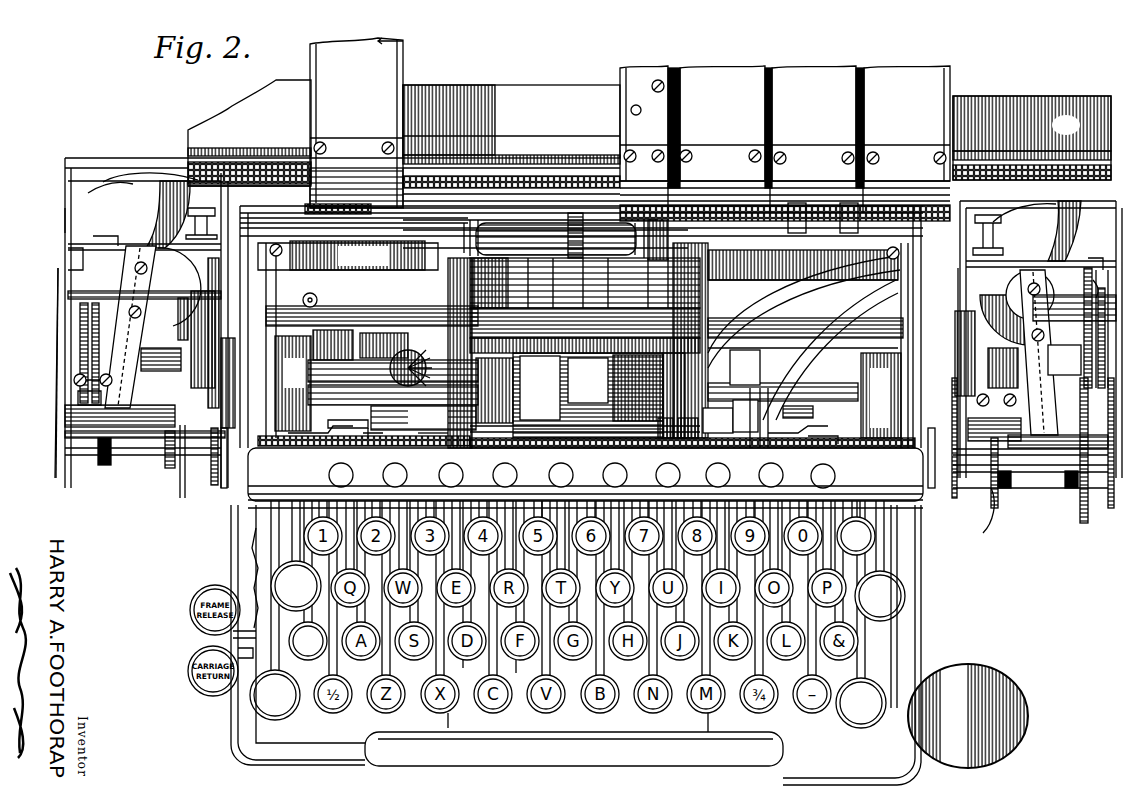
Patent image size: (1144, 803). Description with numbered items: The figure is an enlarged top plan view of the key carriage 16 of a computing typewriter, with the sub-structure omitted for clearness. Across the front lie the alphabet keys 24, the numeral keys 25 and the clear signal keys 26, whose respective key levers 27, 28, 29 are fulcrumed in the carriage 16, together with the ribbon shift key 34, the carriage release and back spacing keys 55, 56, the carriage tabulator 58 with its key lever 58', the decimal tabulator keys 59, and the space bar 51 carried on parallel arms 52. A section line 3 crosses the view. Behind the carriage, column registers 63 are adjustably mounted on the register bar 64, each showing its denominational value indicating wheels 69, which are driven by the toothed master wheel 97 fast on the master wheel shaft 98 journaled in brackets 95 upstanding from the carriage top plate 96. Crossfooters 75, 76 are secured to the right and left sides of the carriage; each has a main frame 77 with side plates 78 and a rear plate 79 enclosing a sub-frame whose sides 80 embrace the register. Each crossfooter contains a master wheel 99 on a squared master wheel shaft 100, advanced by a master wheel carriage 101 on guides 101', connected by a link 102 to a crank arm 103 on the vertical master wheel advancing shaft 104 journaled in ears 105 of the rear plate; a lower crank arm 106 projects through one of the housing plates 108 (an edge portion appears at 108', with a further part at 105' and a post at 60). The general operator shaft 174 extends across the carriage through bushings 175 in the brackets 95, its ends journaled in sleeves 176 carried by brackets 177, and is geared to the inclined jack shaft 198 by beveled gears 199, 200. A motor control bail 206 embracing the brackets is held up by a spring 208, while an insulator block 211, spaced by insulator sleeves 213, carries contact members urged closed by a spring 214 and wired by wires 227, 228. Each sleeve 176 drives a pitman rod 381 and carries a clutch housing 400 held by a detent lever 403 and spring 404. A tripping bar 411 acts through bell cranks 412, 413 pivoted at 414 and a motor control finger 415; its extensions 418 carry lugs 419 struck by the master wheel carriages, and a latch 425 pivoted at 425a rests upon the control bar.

The section line 3 is at (387, 404).
The carriage 16 is at (915, 560).
The alphabet keys 24 is at (526, 650).
The value or numeral keys 25 is at (400, 505).
The clear signal keys 26 is at (844, 547).
The key lever 27 is at (460, 650).
The key lever 28 is at (490, 505).
The key lever 29 is at (305, 592).
The ribbon shift key 34 is at (244, 692).
The space bar 51 is at (574, 749).
The parallel arms 52 is at (466, 710).
The carriage release key 55 is at (898, 590).
The back spacing key 56 is at (845, 712).
The carriage tabulator 58 is at (968, 706).
The key lever 58' is at (926, 606).
The decimal tabulator keys 59 is at (322, 465).
The post 60 is at (93, 458).
The column registers 63 is at (630, 129).
The register bar 64 is at (214, 135).
The denominational value indicating wheels 69 is at (332, 192).
The crossfooter 75 is at (1064, 360).
The crossfooter 76 is at (66, 373).
The crossfooter main frame 77 is at (52, 213).
The side plates 78 is at (50, 456).
The rear plate 79 is at (92, 230).
The sides of sub-frame 80 is at (170, 478).
The brackets 95 is at (472, 222).
The carriage top plate 96 is at (798, 205).
The master wheel 97 is at (560, 170).
The master wheel shaft 98 is at (445, 222).
The master wheel 99 is at (115, 322).
The master wheel shaft 100 is at (70, 332).
The master wheel carriage 101 is at (578, 398).
The guides 101' is at (123, 452).
The link 102 is at (57, 402).
The crank arm 103 is at (168, 358).
The master wheel advancing shaft 104 is at (176, 205).
The ears 105 is at (117, 252).
The sector 105' is at (576, 296).
The crank arm 106 is at (150, 190).
The housing plates 108 is at (145, 149).
The cover edge 108' is at (571, 206).
The general operator shaft 174 is at (605, 361).
The bushings 175 is at (457, 353).
The sleeves 176 is at (216, 445).
The brackets 177 is at (250, 240).
The jack shaft 198 is at (347, 255).
The beveled gear 199 is at (409, 379).
The beveled gear 200 is at (423, 418).
The motor control bail 206 is at (422, 432).
The spring 208 is at (683, 440).
The insulator block 211 is at (748, 440).
The insulator sleeves 213 is at (730, 416).
The spring 214 is at (746, 367).
The wire 227 is at (792, 250).
The wire 228 is at (840, 252).
The pitman rod 381 is at (205, 474).
The housing 400 is at (868, 435).
The detent lever 403 is at (290, 428).
The spring 404 is at (328, 310).
The tripping bar 411 is at (655, 440).
The bell crank 412 is at (330, 420).
The bell crank 413 is at (775, 432).
The pivot 414 is at (801, 406).
The motor control finger 415 is at (365, 432).
The extensions 418 is at (56, 427).
The lugs 419 is at (164, 456).
The latch 425 is at (185, 340).
The pivot 425a is at (182, 346).